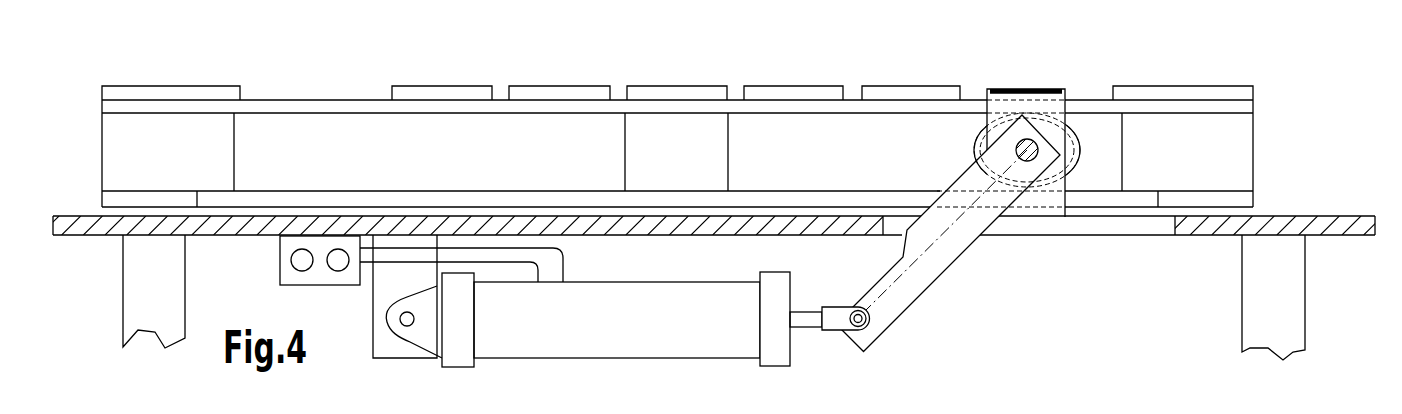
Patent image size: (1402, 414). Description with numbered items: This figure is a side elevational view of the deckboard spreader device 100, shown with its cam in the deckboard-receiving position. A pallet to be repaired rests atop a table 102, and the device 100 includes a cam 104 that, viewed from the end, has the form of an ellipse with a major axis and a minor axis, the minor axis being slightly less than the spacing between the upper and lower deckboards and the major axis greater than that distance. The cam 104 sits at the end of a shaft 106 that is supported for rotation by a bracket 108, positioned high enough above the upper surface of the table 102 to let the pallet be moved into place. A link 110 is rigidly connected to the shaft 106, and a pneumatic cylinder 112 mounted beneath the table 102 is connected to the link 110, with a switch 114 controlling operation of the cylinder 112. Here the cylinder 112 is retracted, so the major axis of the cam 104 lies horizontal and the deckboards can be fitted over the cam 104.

The deckboard spreader device 100 is at (1060, 323).
The table 102 is at (1288, 227).
The cam 104 is at (1080, 143).
The shaft 106 is at (1015, 145).
The bracket 108 is at (1028, 89).
The link 110 is at (953, 242).
The pneumatic cylinder 112 is at (602, 332).
The switch 114 is at (320, 270).